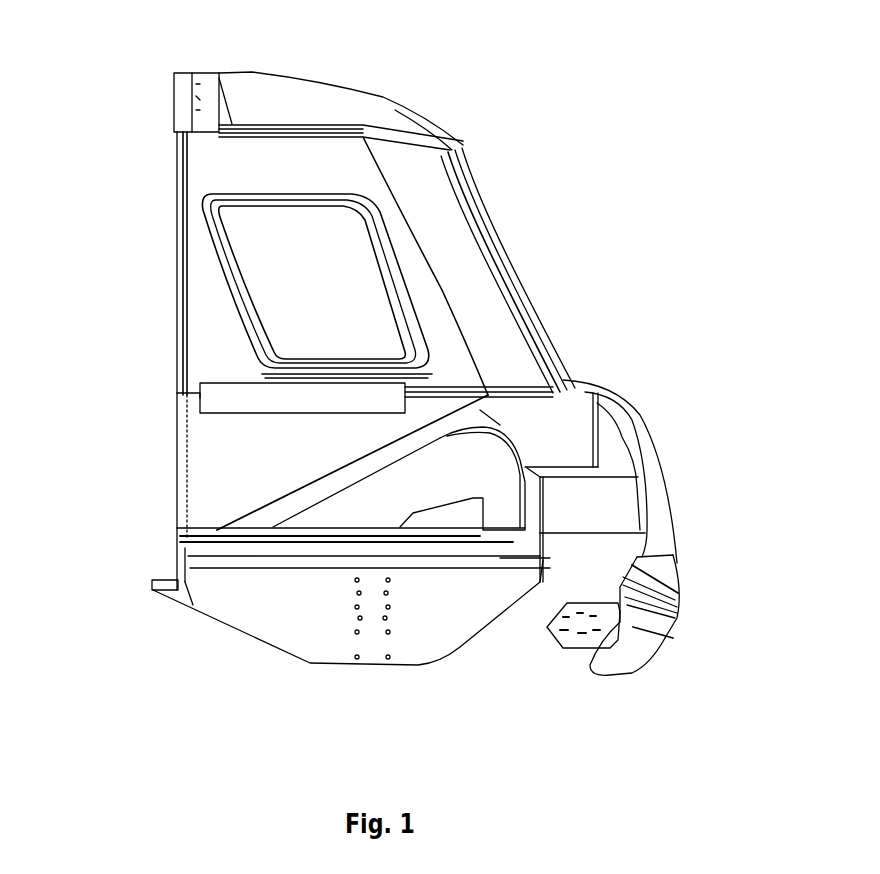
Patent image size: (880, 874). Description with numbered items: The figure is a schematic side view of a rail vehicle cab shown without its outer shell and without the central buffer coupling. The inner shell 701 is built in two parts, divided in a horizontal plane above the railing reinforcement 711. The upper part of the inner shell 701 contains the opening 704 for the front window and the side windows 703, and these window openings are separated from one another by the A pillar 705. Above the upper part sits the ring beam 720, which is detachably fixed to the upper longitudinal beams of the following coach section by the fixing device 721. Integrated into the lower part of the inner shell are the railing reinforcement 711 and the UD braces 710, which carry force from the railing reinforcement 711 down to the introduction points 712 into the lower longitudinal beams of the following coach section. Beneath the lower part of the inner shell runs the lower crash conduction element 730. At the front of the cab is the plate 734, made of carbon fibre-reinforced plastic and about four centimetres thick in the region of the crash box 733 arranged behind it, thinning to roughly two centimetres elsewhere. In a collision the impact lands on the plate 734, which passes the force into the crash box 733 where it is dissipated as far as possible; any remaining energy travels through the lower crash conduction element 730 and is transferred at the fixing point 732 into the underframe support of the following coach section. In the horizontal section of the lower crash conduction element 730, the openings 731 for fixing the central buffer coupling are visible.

The inner shell 701 is at (176, 222).
The side windows 703 is at (258, 287).
The opening for the front window 704 is at (563, 343).
The A pillar 705 is at (430, 207).
The UD braces 710 is at (313, 495).
The railing reinforcement 711 is at (500, 413).
The introduction points 712 is at (175, 545).
The ring beam 720 is at (267, 97).
The fixing device 721 is at (173, 93).
The lower crash conduction element 730 is at (248, 602).
The openings 731 is at (382, 640).
The fixing point 732 is at (152, 582).
The crash box 733 is at (610, 503).
The plate 734 is at (635, 437).